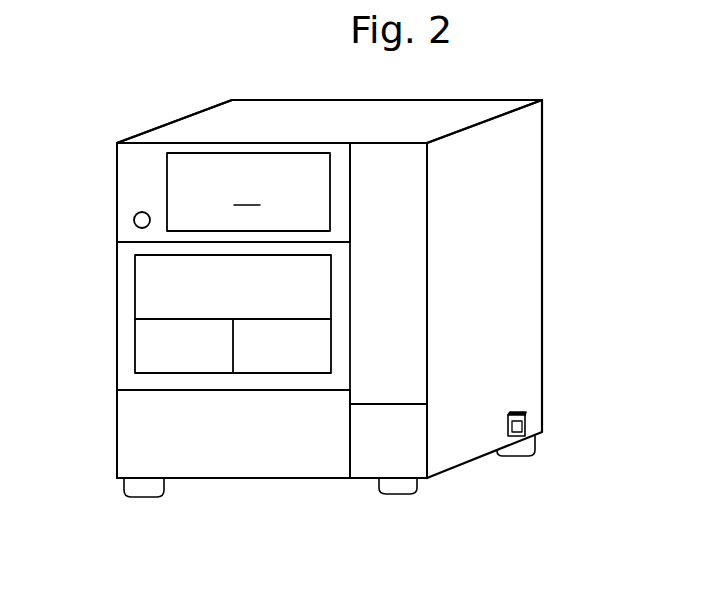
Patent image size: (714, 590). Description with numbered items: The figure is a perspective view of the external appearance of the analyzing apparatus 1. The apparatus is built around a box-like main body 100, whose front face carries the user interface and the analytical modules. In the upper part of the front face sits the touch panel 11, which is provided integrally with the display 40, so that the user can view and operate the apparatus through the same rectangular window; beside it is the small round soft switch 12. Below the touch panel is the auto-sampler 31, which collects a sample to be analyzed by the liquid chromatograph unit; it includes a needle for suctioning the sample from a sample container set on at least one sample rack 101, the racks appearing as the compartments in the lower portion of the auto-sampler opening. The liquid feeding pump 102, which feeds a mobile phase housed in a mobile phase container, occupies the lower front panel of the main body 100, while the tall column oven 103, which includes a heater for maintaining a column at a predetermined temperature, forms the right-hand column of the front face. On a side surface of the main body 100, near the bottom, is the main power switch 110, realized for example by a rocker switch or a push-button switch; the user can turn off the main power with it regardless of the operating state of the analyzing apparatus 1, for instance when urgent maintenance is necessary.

The analyzing apparatus 1 is at (127, 103).
The main body 100 is at (421, 113).
The touch panel 11 is at (177, 187).
The display 40 is at (248, 192).
The soft switch 12 is at (134, 220).
The auto-sampler 31 is at (125, 283).
The sample rack 101 is at (141, 347).
The liquid feeding pump 102 is at (123, 437).
The column oven 103 is at (405, 338).
The main power switch 110 is at (525, 417).